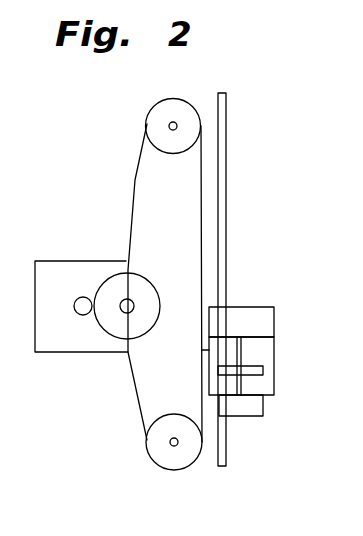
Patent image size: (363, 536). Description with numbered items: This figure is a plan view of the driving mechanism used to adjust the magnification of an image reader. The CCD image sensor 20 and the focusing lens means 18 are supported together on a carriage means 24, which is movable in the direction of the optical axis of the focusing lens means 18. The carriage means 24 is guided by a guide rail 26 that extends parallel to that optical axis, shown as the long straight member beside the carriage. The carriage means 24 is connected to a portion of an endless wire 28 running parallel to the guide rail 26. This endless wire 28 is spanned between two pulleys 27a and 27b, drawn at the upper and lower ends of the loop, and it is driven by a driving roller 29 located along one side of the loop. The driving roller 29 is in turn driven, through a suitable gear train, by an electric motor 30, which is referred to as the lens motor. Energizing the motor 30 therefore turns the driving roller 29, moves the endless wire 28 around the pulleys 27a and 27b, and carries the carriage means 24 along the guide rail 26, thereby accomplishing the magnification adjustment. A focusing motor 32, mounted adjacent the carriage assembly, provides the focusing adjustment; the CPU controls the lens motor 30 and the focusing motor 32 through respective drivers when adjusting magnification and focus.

The focusing lens means 18 is at (262, 314).
The CCD image sensor 20 is at (262, 372).
The carriage means 24 is at (275, 340).
The guide rail 26 is at (227, 103).
The pulley 27a is at (155, 122).
The pulley 27b is at (160, 448).
The endless wire 28 is at (134, 183).
The driving roller 29 is at (125, 305).
The electric motor 30 is at (60, 353).
The focusing motor 32 is at (248, 408).